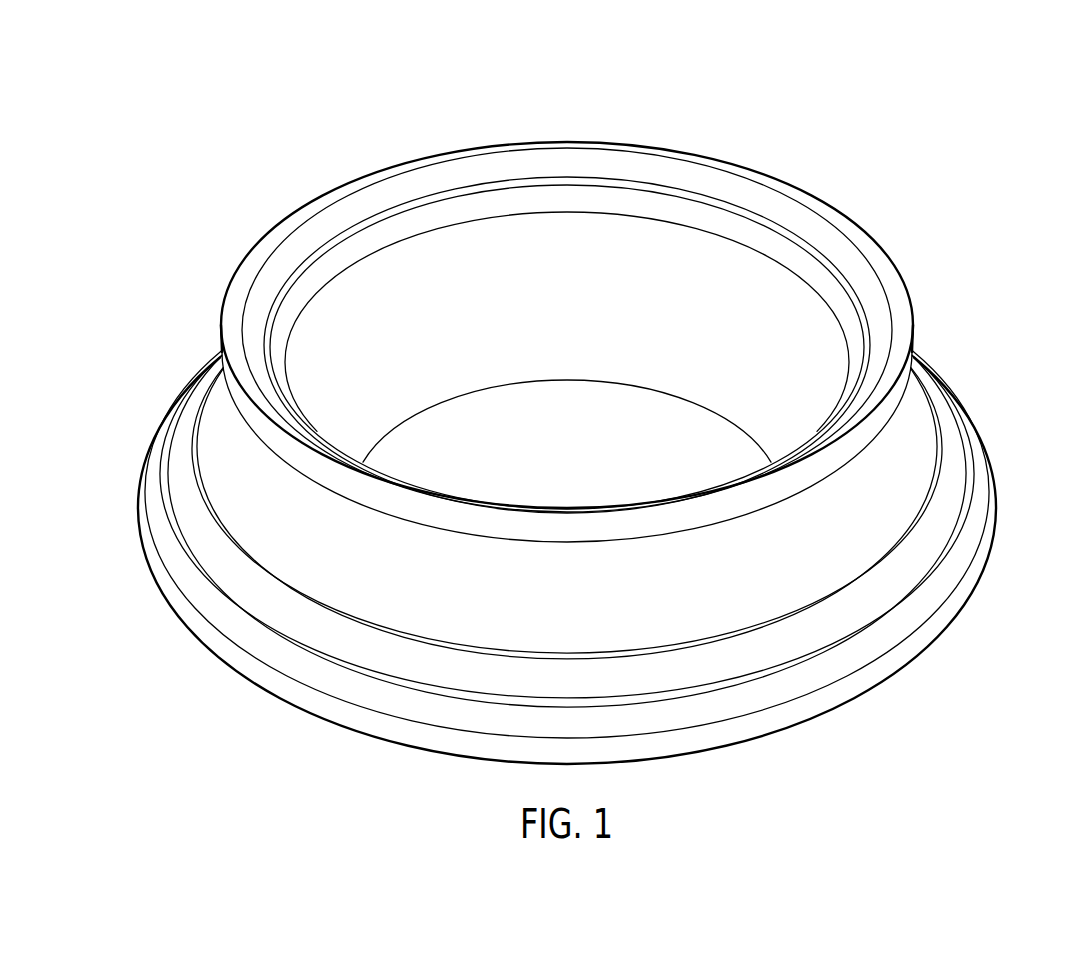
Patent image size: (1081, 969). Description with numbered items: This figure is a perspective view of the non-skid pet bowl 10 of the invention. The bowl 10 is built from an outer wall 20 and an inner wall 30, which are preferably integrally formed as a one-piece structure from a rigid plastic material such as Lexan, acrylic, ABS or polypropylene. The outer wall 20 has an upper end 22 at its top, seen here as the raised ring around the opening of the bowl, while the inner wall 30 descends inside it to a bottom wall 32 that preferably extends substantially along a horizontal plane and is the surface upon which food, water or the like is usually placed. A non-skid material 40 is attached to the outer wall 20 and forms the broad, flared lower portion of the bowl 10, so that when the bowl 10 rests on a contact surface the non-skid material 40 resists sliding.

The non-skid pet bowl 10 is at (828, 120).
The outer wall 20 is at (914, 392).
The upper end 22 is at (232, 305).
The inner wall 30 is at (818, 322).
The bottom wall 32 is at (556, 480).
The non-skid material 40 is at (983, 492).